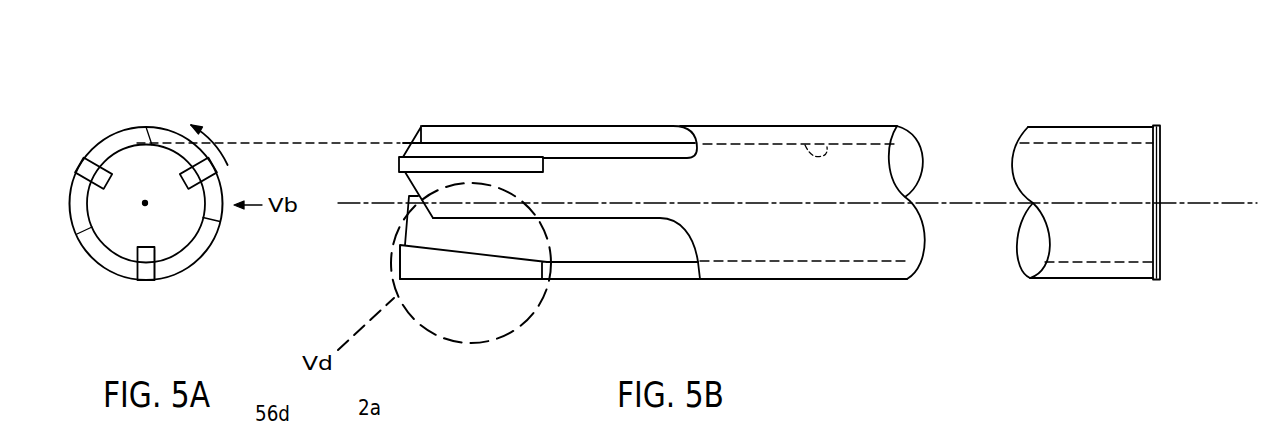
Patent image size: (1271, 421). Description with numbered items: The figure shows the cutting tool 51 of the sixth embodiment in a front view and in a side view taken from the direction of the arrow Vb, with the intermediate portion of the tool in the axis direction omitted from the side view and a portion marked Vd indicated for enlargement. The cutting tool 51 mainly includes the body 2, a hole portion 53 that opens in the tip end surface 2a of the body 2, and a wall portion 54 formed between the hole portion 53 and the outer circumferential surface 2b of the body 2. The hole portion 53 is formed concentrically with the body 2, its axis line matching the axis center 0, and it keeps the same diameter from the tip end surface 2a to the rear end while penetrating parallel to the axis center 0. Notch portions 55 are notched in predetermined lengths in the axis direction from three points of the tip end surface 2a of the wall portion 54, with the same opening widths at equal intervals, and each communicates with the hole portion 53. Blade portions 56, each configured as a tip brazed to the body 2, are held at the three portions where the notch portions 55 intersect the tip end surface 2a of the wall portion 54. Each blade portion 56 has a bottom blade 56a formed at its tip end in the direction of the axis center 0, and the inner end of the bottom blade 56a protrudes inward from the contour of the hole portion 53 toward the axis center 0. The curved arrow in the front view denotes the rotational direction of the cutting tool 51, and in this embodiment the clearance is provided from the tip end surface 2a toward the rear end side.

In FIG. 5A, the cutting tool 51 is at (217, 99).
In FIG. 5B, the cutting tool 51 is at (750, 55).
In FIG. 5A, the hole portion 53 is at (113, 150).
In FIG. 5B, the hole portion 53 is at (827, 147).
In FIG. 5A, the wall portion 54 is at (105, 260).
In FIG. 5B, the wall portion 54 is at (600, 273).
In FIG. 5A, the notch portion 55 is at (199, 244).
In FIG. 5B, the notch portion 55 is at (688, 240).
In FIG. 5A, the blade portion 56 is at (159, 296).
In FIG. 5B, the blade portion 56 is at (465, 268).
In FIG. 5A, the bottom blade 56a is at (155, 270).
In FIG. 5B, the bottom blade 56a is at (400, 256).
In FIG. 5A, the axis center 0 is at (146, 204).
In FIG. 5B, the axis center 0 is at (1220, 200).
In FIG. 5B, the body 2 is at (904, 108).
In FIG. 5B, the tip end surface 2a is at (407, 200).
In FIG. 5B, the outer circumferential surface 2b is at (764, 126).